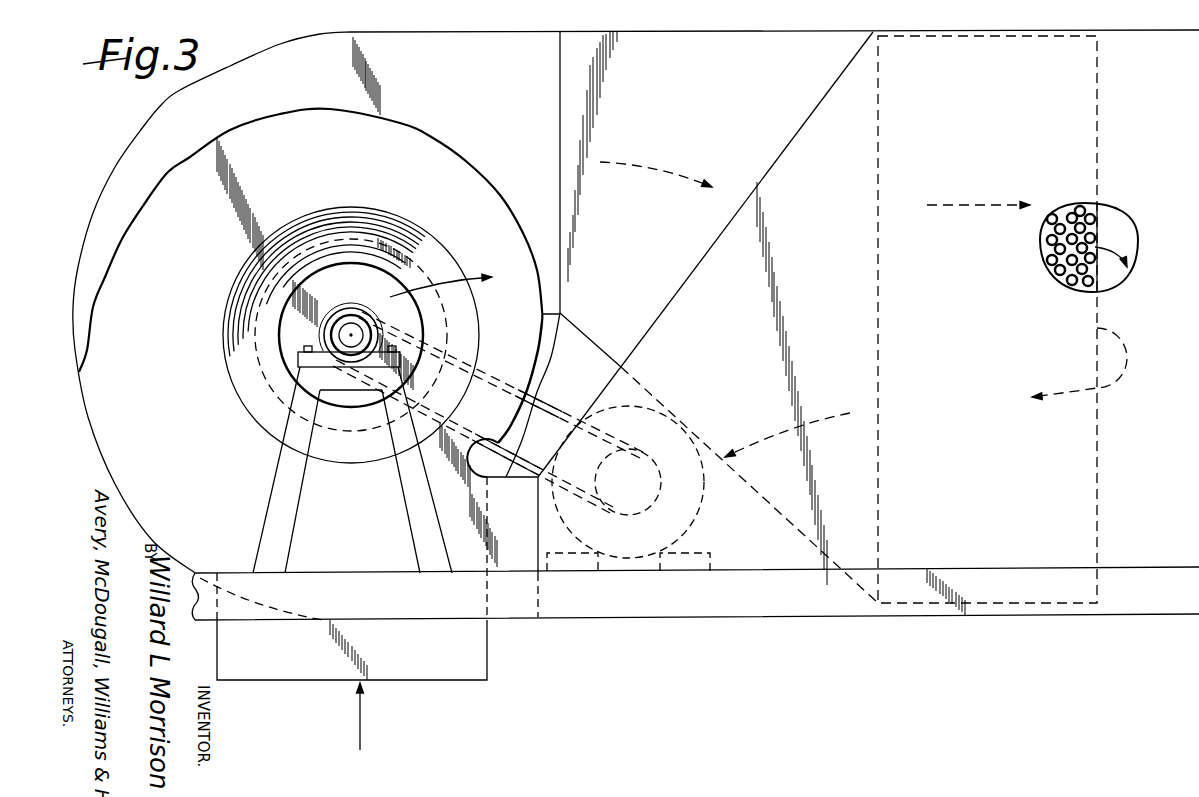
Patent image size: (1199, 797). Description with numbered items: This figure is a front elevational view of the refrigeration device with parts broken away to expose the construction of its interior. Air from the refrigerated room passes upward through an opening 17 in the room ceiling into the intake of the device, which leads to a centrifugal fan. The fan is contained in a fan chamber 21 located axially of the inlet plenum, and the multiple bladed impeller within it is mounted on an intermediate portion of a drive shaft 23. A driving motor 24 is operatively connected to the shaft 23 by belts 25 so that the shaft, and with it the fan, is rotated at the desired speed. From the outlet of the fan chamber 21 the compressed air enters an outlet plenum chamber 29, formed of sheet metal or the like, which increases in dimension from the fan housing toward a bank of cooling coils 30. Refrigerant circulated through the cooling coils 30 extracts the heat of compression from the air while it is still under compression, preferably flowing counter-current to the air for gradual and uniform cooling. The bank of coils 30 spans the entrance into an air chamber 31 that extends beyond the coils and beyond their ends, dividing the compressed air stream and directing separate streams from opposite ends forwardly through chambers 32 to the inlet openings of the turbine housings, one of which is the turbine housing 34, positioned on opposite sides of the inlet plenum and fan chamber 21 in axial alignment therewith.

The opening 17 is at (410, 675).
The fan chamber 21 is at (142, 126).
The drive shaft 23 is at (352, 330).
The driving motor 24 is at (664, 409).
The belts 25 is at (578, 398).
The outlet plenum chamber 29 is at (615, 340).
The bank of cooling coils 30 is at (1094, 220).
The air chamber 31 is at (1170, 553).
The chambers 32 is at (703, 272).
The turbine housing 34 is at (168, 172).